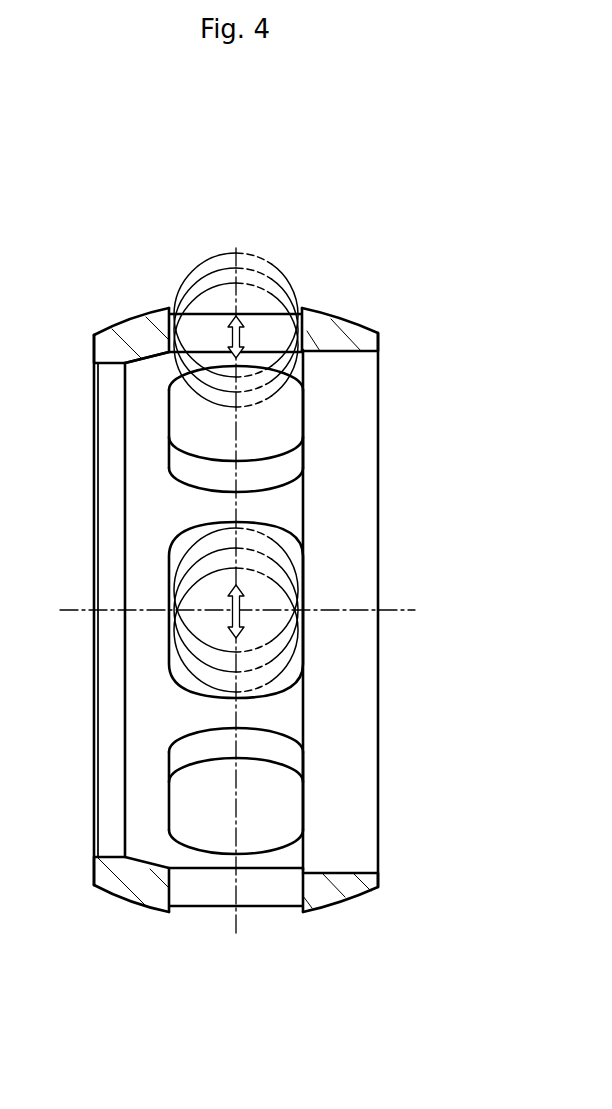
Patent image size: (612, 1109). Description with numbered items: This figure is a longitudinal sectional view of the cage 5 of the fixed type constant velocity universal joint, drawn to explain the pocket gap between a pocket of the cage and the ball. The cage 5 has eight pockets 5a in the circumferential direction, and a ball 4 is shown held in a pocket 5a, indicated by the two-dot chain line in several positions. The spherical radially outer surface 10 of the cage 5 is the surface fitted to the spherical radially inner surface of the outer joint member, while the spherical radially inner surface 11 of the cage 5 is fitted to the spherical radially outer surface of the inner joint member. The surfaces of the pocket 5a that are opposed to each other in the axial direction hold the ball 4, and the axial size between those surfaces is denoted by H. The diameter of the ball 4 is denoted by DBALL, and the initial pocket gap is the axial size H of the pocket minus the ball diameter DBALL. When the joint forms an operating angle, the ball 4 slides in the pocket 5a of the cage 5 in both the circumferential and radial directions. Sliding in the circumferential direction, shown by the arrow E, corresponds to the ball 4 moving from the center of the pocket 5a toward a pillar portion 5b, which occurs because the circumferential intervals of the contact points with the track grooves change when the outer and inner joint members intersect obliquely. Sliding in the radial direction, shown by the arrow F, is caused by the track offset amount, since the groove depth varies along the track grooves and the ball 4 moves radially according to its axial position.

The ball 4 is at (208, 278).
The cage 5 is at (379, 338).
The pocket 5a is at (278, 430).
The pillar portion 5b is at (195, 508).
The spherical radially outer surface 10 is at (346, 319).
The spherical radially inner surface 11 is at (147, 357).
The arrow E is at (242, 618).
The arrow F is at (240, 339).
The axial size of pocket H is at (302, 312).
The diameter of ball DBALL is at (297, 312).